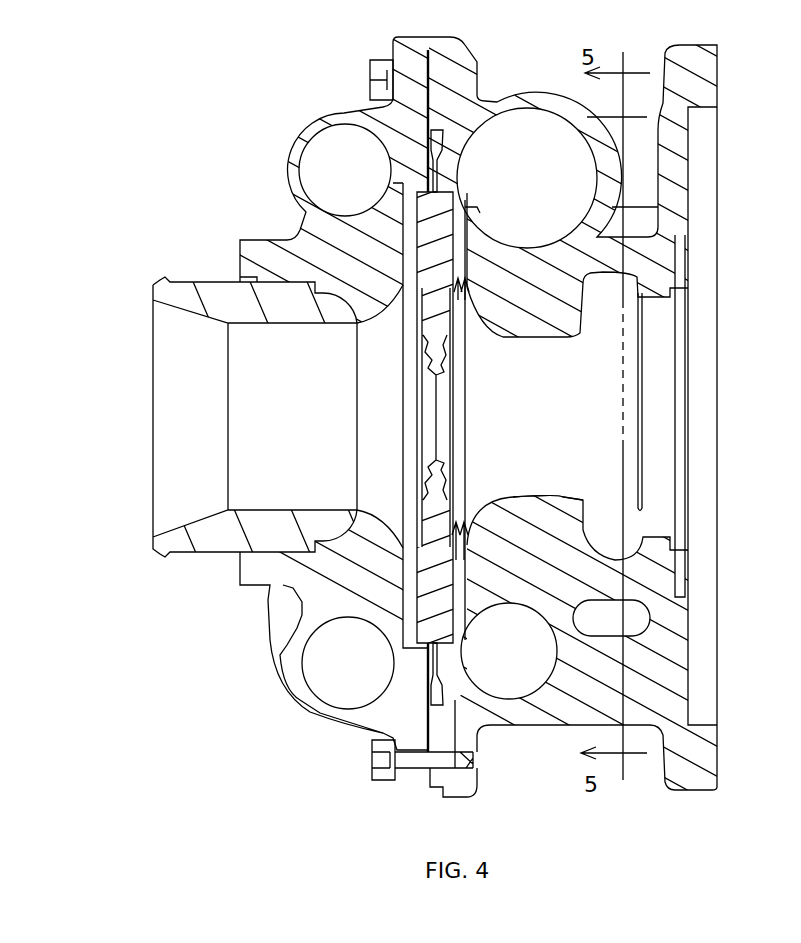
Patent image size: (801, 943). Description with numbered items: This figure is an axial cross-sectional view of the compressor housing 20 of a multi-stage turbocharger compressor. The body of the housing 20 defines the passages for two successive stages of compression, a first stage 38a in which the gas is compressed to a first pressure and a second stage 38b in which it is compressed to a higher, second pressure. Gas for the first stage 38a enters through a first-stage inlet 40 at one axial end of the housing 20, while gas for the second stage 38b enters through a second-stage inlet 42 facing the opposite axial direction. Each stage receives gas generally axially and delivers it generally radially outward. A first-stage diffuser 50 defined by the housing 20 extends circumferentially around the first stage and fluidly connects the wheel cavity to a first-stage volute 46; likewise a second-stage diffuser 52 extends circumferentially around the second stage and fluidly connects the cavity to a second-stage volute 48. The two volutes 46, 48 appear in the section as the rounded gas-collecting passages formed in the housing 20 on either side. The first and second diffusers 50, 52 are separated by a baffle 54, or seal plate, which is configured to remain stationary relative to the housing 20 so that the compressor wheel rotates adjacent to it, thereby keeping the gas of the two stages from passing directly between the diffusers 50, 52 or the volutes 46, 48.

The compressor housing 20 is at (258, 142).
The first stage 38a is at (354, 158).
The second stage 38b is at (545, 152).
The first-stage inlet 40 is at (192, 412).
The second-stage inlet 42 is at (547, 497).
The first-stage volute 46 is at (335, 667).
The second-stage volute 48 is at (527, 658).
The first-stage diffuser 50 is at (415, 300).
The second-stage diffuser 52 is at (467, 335).
The baffle 54 is at (437, 242).